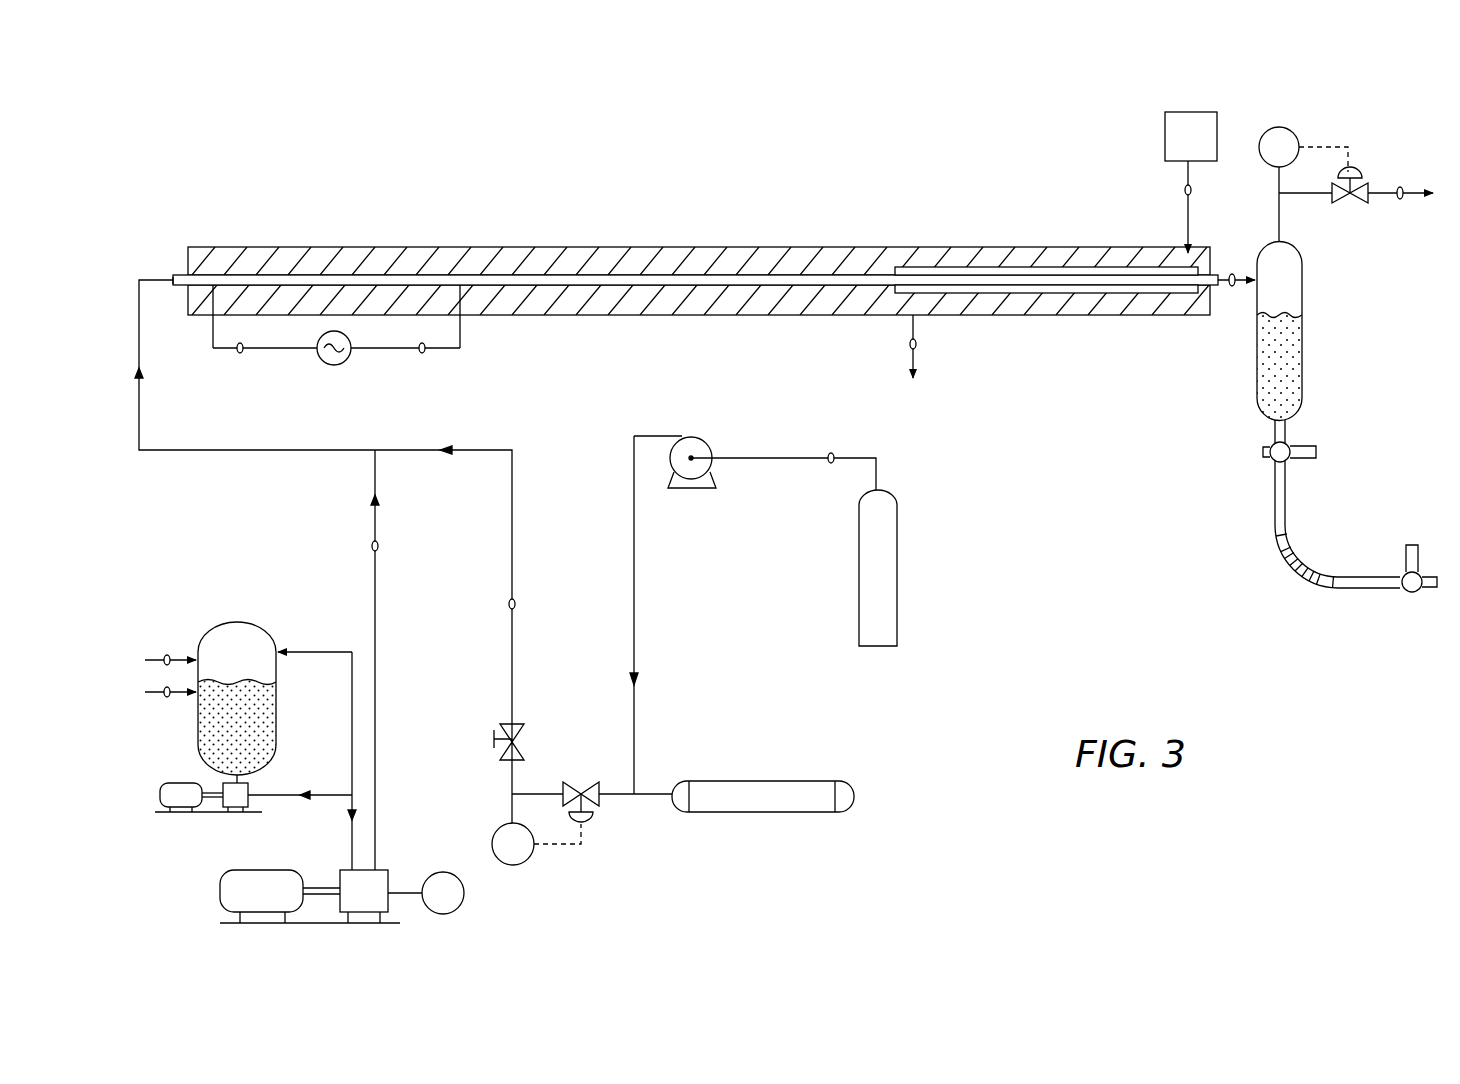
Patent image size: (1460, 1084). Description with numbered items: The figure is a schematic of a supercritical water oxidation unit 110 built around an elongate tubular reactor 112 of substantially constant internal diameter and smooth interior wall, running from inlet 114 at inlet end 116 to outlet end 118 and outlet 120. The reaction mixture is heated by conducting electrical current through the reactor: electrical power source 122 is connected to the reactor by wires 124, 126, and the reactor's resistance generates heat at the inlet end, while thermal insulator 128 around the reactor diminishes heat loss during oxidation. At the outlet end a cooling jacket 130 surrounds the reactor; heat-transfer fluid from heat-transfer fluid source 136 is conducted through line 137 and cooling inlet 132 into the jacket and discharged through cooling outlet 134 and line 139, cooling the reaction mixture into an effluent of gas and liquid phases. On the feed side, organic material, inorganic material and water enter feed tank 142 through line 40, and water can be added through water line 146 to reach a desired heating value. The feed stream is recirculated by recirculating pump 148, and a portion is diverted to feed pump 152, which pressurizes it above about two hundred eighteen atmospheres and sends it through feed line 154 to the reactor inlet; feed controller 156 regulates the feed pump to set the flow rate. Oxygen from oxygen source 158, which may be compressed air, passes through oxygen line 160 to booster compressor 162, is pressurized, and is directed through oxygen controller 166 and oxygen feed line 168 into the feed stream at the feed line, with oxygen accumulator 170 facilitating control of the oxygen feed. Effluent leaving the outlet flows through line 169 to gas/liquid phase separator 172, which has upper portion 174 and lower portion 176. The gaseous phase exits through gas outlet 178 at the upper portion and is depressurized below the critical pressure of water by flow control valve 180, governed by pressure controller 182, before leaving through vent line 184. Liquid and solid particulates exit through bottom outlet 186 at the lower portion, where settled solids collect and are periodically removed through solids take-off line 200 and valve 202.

The supercritical water oxidation unit 110 is at (392, 154).
The tubular reactor 112 is at (690, 268).
The inlet 114 is at (172, 276).
The inlet end 116 is at (320, 273).
The outlet end 118 is at (938, 272).
The outlet 120 is at (1222, 276).
The electrical power source 122 is at (345, 362).
The wire 124 is at (240, 353).
The wire 126 is at (422, 353).
The thermal insulator 128 is at (778, 262).
The cooling jacket 130 is at (1022, 266).
The cooling inlet 132 is at (1184, 262).
The cooling outlet 134 is at (915, 293).
The heat-transfer fluid source 136 is at (1165, 135).
The line 137 is at (1185, 190).
The line 139 is at (910, 344).
The line 40 is at (166, 655).
The feed tank 142 is at (198, 745).
The water line 146 is at (166, 697).
The recirculating pump 148 is at (238, 810).
The feed pump 152 is at (366, 906).
The feed line 154 is at (370, 546).
The feed controller 156 is at (459, 909).
The oxygen source 158 is at (897, 556).
The oxygen line 160 is at (831, 453).
The booster compressor 162 is at (703, 442).
The oxygen controller 166 is at (528, 859).
The oxygen feed line 168 is at (509, 604).
The line 169 is at (1233, 288).
The oxygen accumulator 170 is at (745, 781).
The gas/liquid phase separator 172 is at (1305, 334).
The upper portion 174 is at (1302, 288).
The lower portion 176 is at (1302, 381).
The gas outlet 178 is at (1283, 244).
The flow control valve 180 is at (1360, 203).
The pressure controller 182 is at (1279, 127).
The vent line 184 is at (1400, 187).
The bottom outlet 186 is at (1286, 424).
The solids take-off line 200 is at (1287, 514).
The valve 202 is at (1410, 592).